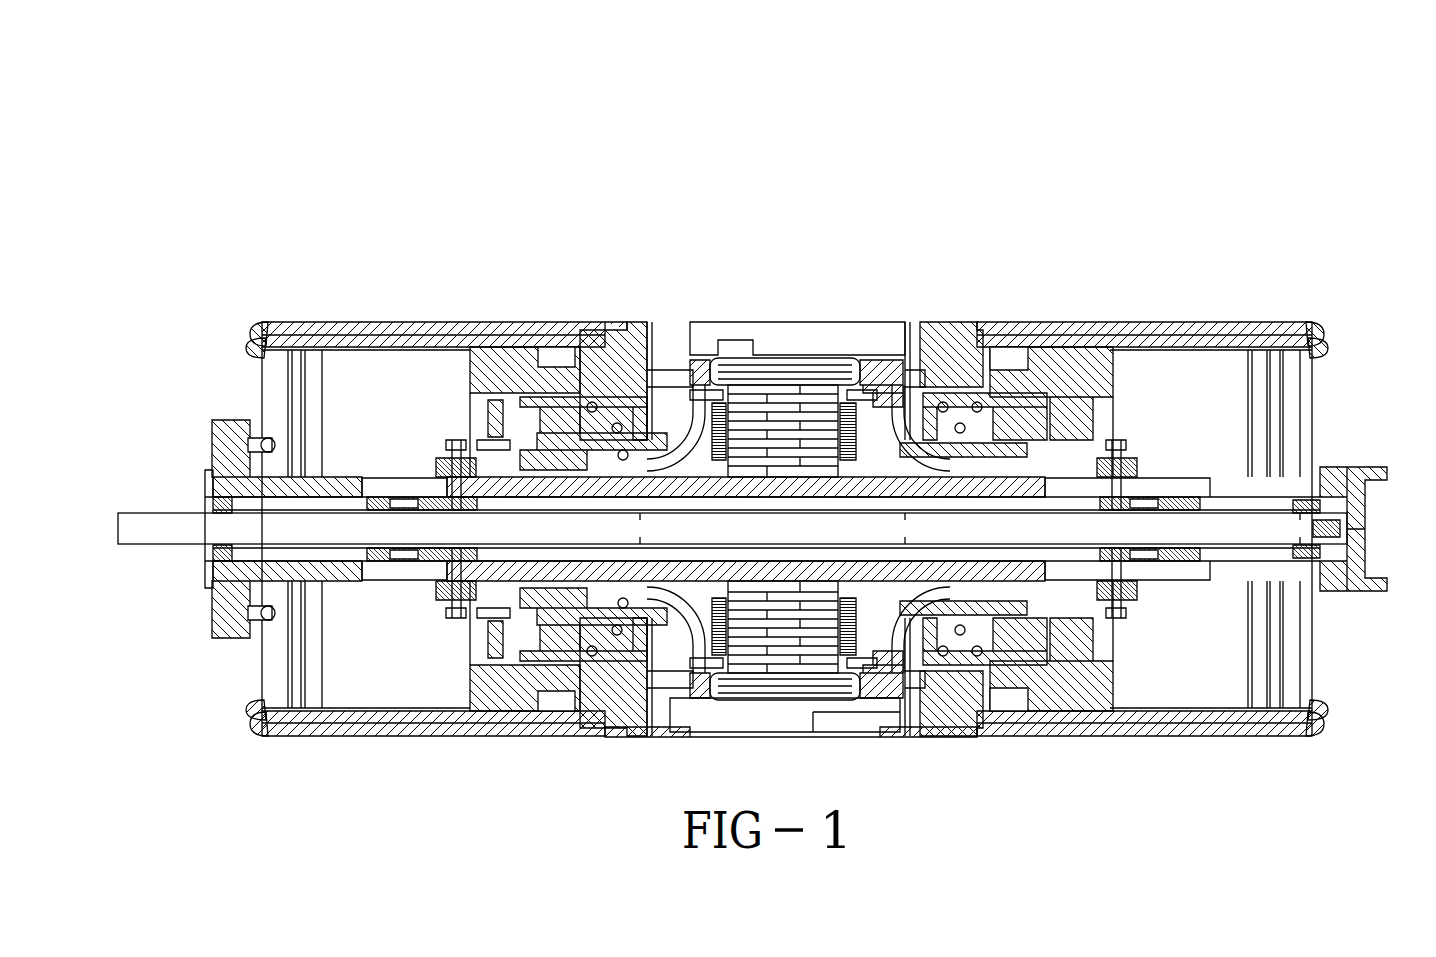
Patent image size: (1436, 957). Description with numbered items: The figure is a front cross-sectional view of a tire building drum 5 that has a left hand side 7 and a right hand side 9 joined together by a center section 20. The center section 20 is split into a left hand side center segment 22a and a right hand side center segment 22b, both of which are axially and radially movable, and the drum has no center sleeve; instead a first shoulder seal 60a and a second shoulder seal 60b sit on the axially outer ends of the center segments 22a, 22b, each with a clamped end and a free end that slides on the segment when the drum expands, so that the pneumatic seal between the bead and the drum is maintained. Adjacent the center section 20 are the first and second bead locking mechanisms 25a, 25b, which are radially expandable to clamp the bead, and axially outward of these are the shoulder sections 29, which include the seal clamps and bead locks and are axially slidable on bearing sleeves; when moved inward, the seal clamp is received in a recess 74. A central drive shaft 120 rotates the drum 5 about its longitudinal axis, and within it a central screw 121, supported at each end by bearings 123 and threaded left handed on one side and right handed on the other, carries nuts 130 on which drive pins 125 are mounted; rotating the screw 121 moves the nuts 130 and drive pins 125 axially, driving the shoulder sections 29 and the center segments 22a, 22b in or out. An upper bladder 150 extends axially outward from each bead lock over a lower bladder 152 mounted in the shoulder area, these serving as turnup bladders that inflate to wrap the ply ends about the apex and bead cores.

The tire building drum 5 is at (260, 192).
The left hand side 7 is at (346, 306).
The right hand side 9 is at (1222, 306).
The center section 20 is at (775, 292).
The left hand side center segment 22a is at (660, 340).
The right hand side center segment 22b is at (912, 340).
The first bead locking mechanism 25a is at (600, 400).
The second bead locking mechanism 25b is at (960, 400).
The shoulder section 29 is at (510, 360).
The first shoulder seal 60a is at (640, 345).
The second shoulder seal 60b is at (945, 340).
The recess 74 is at (930, 330).
The central drive shaft 120 is at (225, 490).
The central screw 121 is at (655, 530).
The bearings 123 is at (210, 566).
The drive pins 125 is at (440, 463).
The nuts 130 is at (390, 557).
The upper bladder 150 is at (258, 325).
The lower bladder 152 is at (258, 348).